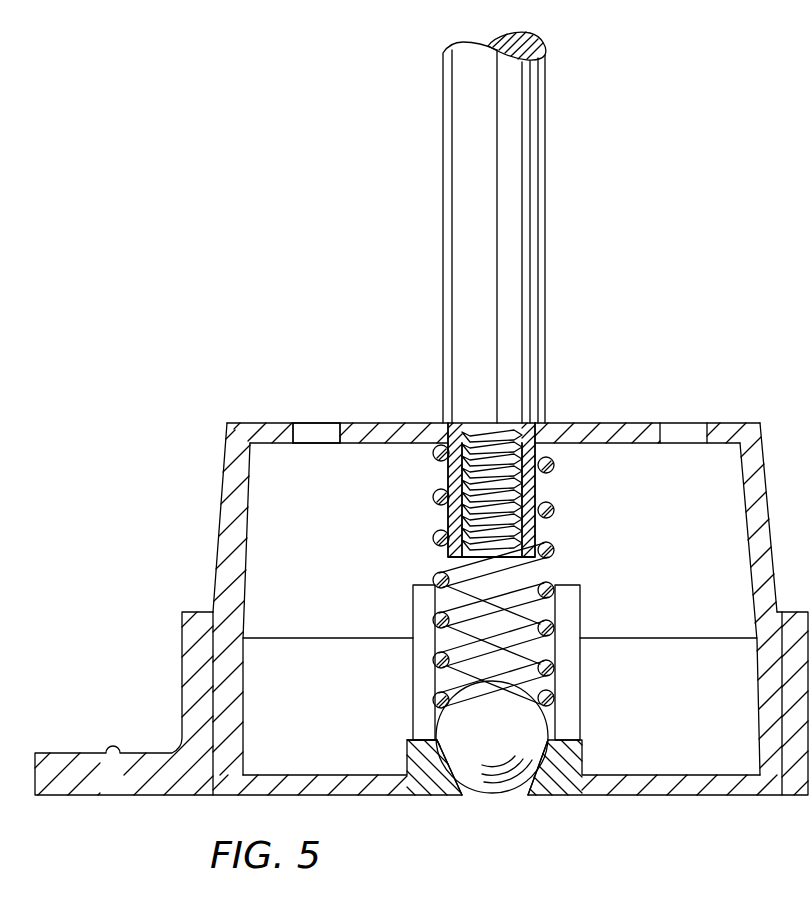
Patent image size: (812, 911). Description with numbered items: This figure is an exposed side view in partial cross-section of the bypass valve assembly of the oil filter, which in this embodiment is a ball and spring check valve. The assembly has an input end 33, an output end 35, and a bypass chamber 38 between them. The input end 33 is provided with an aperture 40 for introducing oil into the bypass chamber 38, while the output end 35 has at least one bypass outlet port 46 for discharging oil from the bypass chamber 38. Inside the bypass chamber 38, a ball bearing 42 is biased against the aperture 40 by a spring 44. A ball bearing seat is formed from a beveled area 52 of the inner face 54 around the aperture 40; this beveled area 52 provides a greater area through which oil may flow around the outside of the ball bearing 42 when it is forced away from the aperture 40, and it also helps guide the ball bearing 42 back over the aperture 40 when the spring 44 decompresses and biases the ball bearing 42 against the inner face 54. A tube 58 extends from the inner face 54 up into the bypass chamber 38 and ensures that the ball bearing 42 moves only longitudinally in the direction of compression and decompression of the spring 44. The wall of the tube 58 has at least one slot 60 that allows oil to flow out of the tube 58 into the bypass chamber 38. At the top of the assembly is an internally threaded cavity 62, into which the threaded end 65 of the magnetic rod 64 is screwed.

The input end 33 is at (657, 797).
The output end 35 is at (740, 424).
The bypass chamber 38 is at (321, 522).
The aperture 40 is at (507, 796).
The ball bearing 42 is at (540, 710).
The spring 44 is at (510, 650).
The bypass outlet port 46 is at (318, 428).
The beveled area 52 is at (445, 748).
The inner face 54 is at (425, 741).
The tube 58 is at (412, 650).
The slot 60 is at (495, 587).
The internally threaded cavity 62 is at (528, 523).
The magnetic rod 64 is at (551, 243).
The threaded end 65 is at (537, 477).